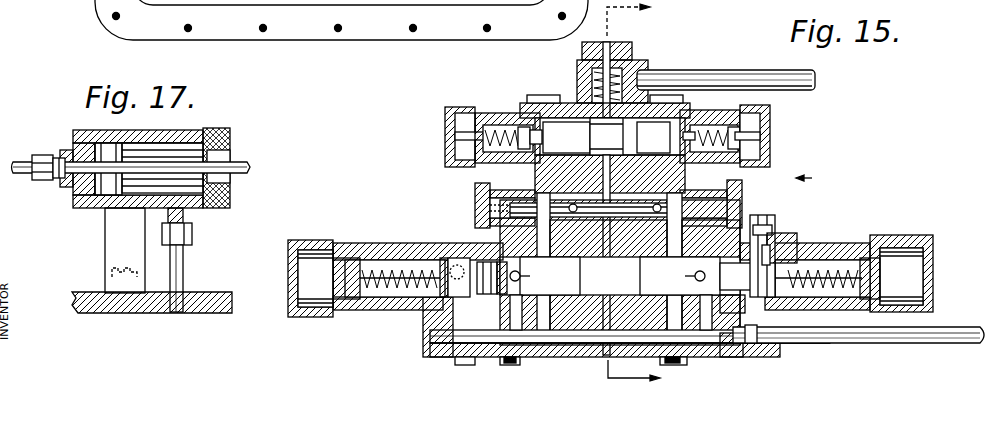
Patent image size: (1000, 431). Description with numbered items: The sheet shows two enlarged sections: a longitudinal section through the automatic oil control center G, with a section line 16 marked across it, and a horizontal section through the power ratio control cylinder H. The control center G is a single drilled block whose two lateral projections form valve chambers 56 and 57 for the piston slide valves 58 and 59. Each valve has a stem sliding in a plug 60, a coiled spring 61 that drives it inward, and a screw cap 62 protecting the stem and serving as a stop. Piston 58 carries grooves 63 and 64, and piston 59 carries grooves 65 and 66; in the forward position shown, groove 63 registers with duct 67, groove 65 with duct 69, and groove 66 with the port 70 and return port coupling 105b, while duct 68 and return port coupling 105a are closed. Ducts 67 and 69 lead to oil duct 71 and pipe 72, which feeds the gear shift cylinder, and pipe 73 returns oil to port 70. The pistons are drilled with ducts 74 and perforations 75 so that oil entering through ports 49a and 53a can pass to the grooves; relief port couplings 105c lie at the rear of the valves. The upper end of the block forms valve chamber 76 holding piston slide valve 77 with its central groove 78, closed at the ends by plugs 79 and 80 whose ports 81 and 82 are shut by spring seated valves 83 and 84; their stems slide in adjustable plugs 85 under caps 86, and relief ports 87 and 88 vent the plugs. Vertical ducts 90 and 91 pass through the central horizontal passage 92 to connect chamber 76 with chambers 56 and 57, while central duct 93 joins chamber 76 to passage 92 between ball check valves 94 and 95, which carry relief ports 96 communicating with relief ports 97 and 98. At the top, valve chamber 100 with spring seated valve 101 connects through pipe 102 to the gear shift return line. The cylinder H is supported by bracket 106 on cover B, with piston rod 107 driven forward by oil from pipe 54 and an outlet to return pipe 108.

In FIG. 17, the oil pipe 54 is at (43, 155).
In FIG. 17, the power ratio control cylinder H is at (215, 130).
In FIG. 17, the piston rod 107 is at (252, 166).
In FIG. 17, the bracket 106 is at (108, 233).
In FIG. 17, the return pipe 108 is at (186, 252).
In FIG. 17, the cover B is at (207, 298).
In FIG. 15, the section line 16— 16 is at (646, 194).
In FIG. 15, the automatic oil control center G is at (813, 178).
In FIG. 15, the valve chamber 100 is at (580, 74).
In FIG. 15, the spring seated valve 101 is at (590, 96).
In FIG. 15, the pipe 102 is at (752, 60).
In FIG. 15, the valve chamber 76 is at (566, 137).
In FIG. 15, the central circumferential groove 78 is at (632, 138).
In FIG. 15, the piston slide valve 77 is at (655, 137).
In FIG. 15, the duct 93 is at (604, 175).
In FIG. 15, the cap 86 is at (446, 122).
In FIG. 15, the screw-threaded plug 85 is at (456, 135).
In FIG. 15, the screw-threaded plug 79 is at (512, 116).
In FIG. 15, the relief port 87 is at (494, 128).
In FIG. 15, the spring seated valve 83 is at (522, 143).
In FIG. 15, the port 81 is at (530, 140).
In FIG. 15, the screw-threaded plug 80 is at (702, 122).
In FIG. 15, the relief port 88 is at (722, 130).
In FIG. 15, the port 82 is at (692, 142).
In FIG. 15, the spring seated valve 84 is at (735, 150).
In FIG. 15, the relief port 96 is at (492, 200).
In FIG. 15, the relief port 97 is at (492, 211).
In FIG. 15, the relief port 98 is at (730, 206).
In FIG. 15, the ball check valve 94 is at (552, 215).
In FIG. 15, the ball check valve 95 is at (650, 212).
In FIG. 15, the central horizontal passage 92 is at (620, 225).
In FIG. 15, the duct 91 is at (690, 237).
In FIG. 15, the perforations 75 is at (545, 276).
In FIG. 15, the circumferential groove 65 is at (742, 276).
In FIG. 15, the port 53a is at (596, 343).
In FIG. 15, the port 49a is at (640, 372).
In FIG. 15, the oil duct 71 is at (568, 343).
In FIG. 15, the piston slide valve 58 is at (430, 338).
In FIG. 15, the oil duct 68 is at (460, 360).
In FIG. 15, the oil duct 67 is at (505, 360).
In FIG. 15, the duct 74 is at (555, 300).
In FIG. 15, the oil duct 69 is at (705, 330).
In FIG. 15, the screw cap 62 is at (310, 242).
In FIG. 15, the plug 60 is at (333, 276).
In FIG. 15, the valve chamber 56 is at (378, 262).
In FIG. 15, the coiled spring 61 is at (372, 283).
In FIG. 15, the relief port coupling 105c is at (382, 288).
In FIG. 15, the return port coupling 105a is at (443, 298).
In FIG. 15, the circumferential groove 64 is at (460, 262).
In FIG. 15, the circumferential groove 63 is at (497, 262).
In FIG. 15, the duct 90 is at (526, 240).
In FIG. 15, the valve chamber 57 is at (840, 290).
In FIG. 15, the circumferential groove 66 is at (770, 292).
In FIG. 15, the piston slide valve 59 is at (762, 230).
In FIG. 15, the pipe 73 is at (772, 245).
In FIG. 15, the oil duct 70 is at (768, 258).
In FIG. 15, the pipe 72 is at (840, 340).
In FIG. 15, the return port coupling 105b is at (757, 297).